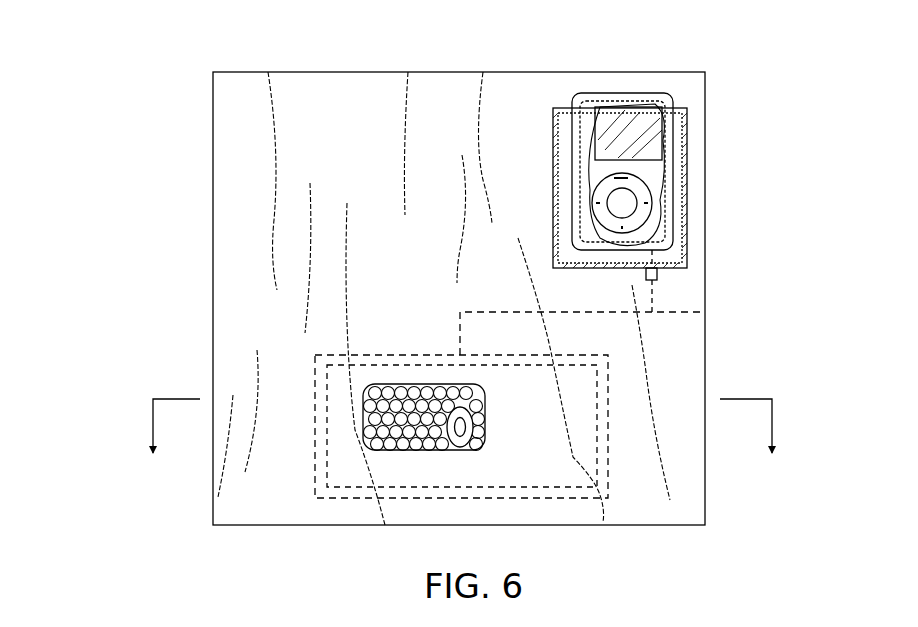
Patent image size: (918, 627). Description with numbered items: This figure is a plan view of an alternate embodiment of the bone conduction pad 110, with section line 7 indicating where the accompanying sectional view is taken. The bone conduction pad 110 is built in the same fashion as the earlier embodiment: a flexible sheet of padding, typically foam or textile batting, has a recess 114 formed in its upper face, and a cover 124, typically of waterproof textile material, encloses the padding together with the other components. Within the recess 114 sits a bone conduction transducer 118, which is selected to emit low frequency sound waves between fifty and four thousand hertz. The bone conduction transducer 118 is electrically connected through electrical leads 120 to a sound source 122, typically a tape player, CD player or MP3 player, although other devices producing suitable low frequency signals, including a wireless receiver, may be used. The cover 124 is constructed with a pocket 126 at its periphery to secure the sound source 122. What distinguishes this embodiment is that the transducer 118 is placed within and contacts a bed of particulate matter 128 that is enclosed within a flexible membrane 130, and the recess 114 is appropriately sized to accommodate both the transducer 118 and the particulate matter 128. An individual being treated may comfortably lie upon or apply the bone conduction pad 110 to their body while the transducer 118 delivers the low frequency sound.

The bone conduction pad 110 is at (168, 70).
The recess 114 is at (705, 313).
The bone conduction transducer 118 is at (470, 448).
The electrical leads 120 is at (490, 308).
The sound source 122 is at (667, 100).
The cover 124 is at (232, 252).
The pocket 126 is at (562, 110).
The particulate matter 128 is at (410, 450).
The flexible membrane 130 is at (307, 350).
The section line 7 is at (464, 436).